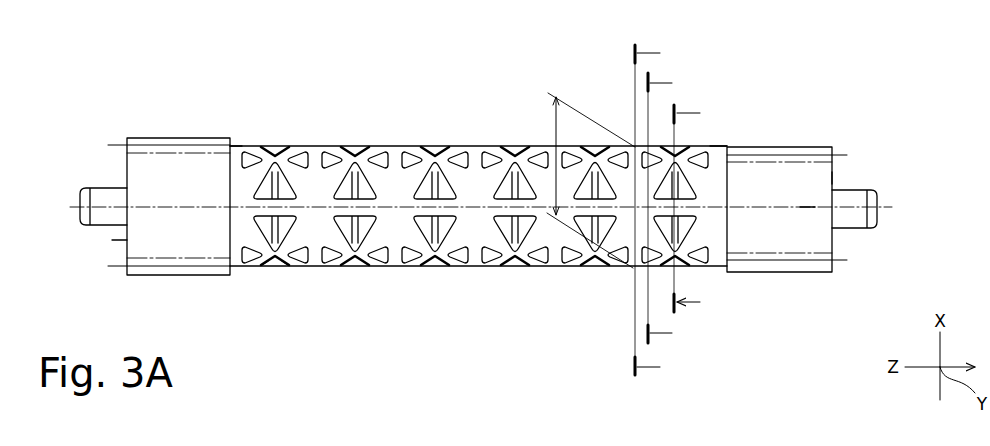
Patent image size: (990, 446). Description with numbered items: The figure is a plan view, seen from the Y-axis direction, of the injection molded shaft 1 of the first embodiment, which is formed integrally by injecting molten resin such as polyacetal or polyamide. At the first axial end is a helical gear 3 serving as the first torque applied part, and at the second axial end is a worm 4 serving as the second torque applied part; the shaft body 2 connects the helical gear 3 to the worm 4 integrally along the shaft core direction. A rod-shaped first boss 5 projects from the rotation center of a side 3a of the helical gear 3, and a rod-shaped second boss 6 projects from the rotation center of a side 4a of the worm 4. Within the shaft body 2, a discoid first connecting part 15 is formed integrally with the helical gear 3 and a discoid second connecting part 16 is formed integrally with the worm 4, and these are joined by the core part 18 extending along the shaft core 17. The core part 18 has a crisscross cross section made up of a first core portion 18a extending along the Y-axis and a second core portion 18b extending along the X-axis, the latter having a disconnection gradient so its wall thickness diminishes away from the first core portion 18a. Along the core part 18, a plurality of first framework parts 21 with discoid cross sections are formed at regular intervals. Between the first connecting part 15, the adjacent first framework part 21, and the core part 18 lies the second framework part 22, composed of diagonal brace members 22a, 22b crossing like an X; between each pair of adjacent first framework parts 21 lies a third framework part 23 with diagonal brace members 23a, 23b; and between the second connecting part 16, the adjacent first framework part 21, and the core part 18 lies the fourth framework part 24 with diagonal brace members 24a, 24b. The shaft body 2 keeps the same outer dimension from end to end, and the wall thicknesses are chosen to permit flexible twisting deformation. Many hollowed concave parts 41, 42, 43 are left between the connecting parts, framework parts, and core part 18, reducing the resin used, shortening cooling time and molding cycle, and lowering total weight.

The injection molded shaft 1 is at (855, 142).
The shaft body 2 is at (496, 144).
The helical gear 3 is at (163, 145).
The side of the helical gear 3a is at (112, 240).
The worm 4 is at (797, 155).
The side of the worm 4a is at (833, 178).
The first boss 5 is at (105, 190).
The second boss 6 is at (852, 215).
The first connecting part 15 is at (236, 147).
The second connecting part 16 is at (735, 148).
The shaft core 17 is at (807, 210).
The core part 18 is at (233, 333).
The first core portion 18a is at (268, 265).
The second core portion 18b is at (283, 265).
The first framework part 21 is at (307, 148).
The second framework part 22 is at (223, 53).
The diagonal brace member 22a is at (190, 297).
The diagonal brace member 22b is at (322, 366).
The third framework part 23 is at (399, 53).
The diagonal brace member 23a is at (370, 150).
The diagonal brace member 23b is at (342, 150).
The fourth framework part 24 is at (794, 47).
The diagonal brace member 24a is at (718, 150).
The diagonal brace member 24b is at (660, 150).
The hollowed concave part 41 is at (262, 188).
The hollowed concave part 42 is at (273, 150).
The hollowed concave part 43 is at (262, 212).